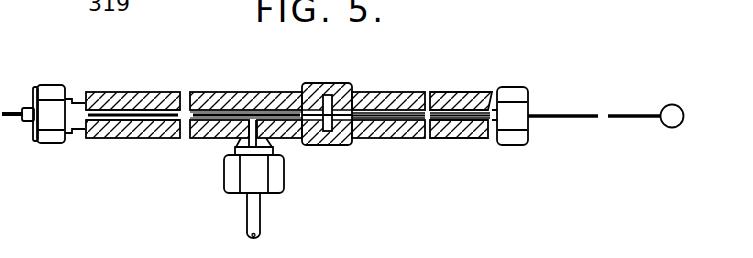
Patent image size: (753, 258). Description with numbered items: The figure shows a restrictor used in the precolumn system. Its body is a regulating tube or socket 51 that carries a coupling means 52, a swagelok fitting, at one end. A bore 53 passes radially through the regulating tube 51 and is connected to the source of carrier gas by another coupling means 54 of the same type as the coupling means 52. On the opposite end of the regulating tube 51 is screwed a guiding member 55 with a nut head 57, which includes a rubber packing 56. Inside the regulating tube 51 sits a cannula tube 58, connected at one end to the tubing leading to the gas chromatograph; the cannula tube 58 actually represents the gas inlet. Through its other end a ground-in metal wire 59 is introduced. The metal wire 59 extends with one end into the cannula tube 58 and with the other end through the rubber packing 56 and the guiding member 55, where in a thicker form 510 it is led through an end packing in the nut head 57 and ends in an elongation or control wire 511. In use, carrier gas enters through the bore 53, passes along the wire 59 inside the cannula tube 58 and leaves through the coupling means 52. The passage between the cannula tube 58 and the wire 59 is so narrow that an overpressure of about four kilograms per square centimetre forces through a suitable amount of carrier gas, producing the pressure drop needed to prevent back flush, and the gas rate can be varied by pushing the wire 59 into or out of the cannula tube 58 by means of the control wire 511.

The regulating tube 51 is at (202, 93).
The coupling means 52 is at (50, 83).
The bore 53 is at (233, 138).
The coupling means 54 is at (237, 195).
The guiding member 55 is at (398, 90).
The rubber packing 56 is at (330, 97).
The nut head 57 is at (516, 88).
The cannula tube 58 is at (108, 113).
The ground-in metal wire 59 is at (305, 86).
The thicker form of metal wire 510 is at (480, 106).
The control wire 511 is at (560, 115).